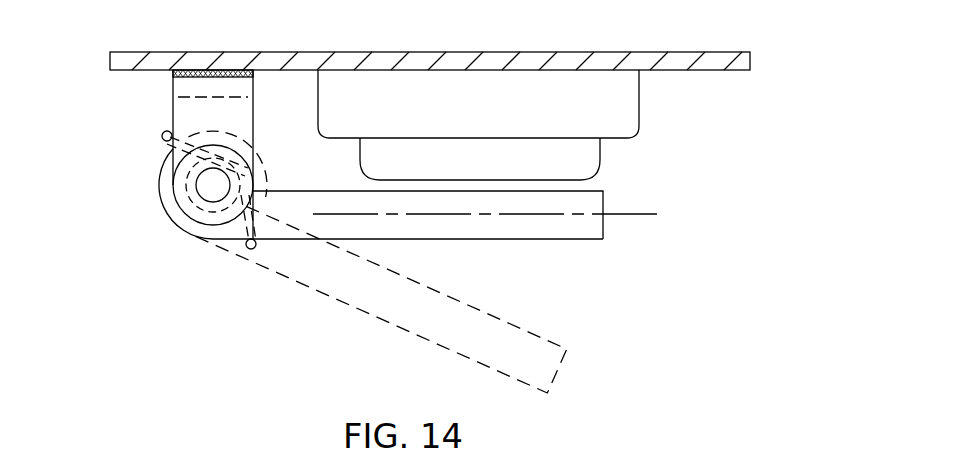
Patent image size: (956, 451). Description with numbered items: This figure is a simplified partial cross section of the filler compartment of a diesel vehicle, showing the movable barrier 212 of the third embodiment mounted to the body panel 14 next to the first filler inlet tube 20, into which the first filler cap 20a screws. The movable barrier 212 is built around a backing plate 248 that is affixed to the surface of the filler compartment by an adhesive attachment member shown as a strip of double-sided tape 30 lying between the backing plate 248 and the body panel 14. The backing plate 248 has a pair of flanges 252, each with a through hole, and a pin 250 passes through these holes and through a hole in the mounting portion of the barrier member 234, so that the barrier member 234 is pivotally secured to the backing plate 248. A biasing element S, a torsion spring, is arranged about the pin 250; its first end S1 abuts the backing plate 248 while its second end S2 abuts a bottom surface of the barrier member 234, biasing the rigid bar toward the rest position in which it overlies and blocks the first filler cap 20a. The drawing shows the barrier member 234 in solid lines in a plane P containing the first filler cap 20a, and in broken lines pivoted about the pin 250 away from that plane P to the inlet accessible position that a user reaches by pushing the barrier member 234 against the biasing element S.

The body panel 14 is at (591, 50).
The double-sided tape 30 is at (226, 73).
The first filler inlet tube 20 is at (640, 104).
The first filler cap 20a is at (601, 160).
The movable barrier 212 is at (94, 125).
The backing plate 248 is at (173, 103).
The pin 250 is at (197, 199).
The flange 252 is at (257, 184).
The barrier member 234 is at (567, 240).
The biasing element S is at (211, 150).
The first end of the biasing element S1 is at (163, 140).
The second end of the biasing element S2 is at (254, 249).
The plane P is at (495, 215).